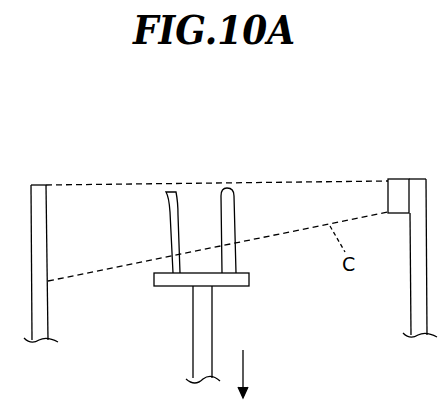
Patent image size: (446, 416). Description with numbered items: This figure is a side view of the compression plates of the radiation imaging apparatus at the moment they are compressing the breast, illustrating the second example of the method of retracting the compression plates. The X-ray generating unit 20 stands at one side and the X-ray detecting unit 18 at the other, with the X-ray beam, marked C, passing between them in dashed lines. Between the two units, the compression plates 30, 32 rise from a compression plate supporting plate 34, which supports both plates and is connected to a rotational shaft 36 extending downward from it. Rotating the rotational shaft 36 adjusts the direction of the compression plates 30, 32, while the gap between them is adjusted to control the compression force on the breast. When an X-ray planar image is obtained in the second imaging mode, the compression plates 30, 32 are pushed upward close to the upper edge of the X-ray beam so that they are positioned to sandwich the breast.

The X-ray detecting unit 18 is at (43, 188).
The X-ray generating unit 20 is at (397, 190).
The compression plate 30 is at (236, 259).
The compression plate 32 is at (172, 265).
The compression plate supporting plate 34 is at (249, 279).
The rotational shaft 36 is at (197, 338).